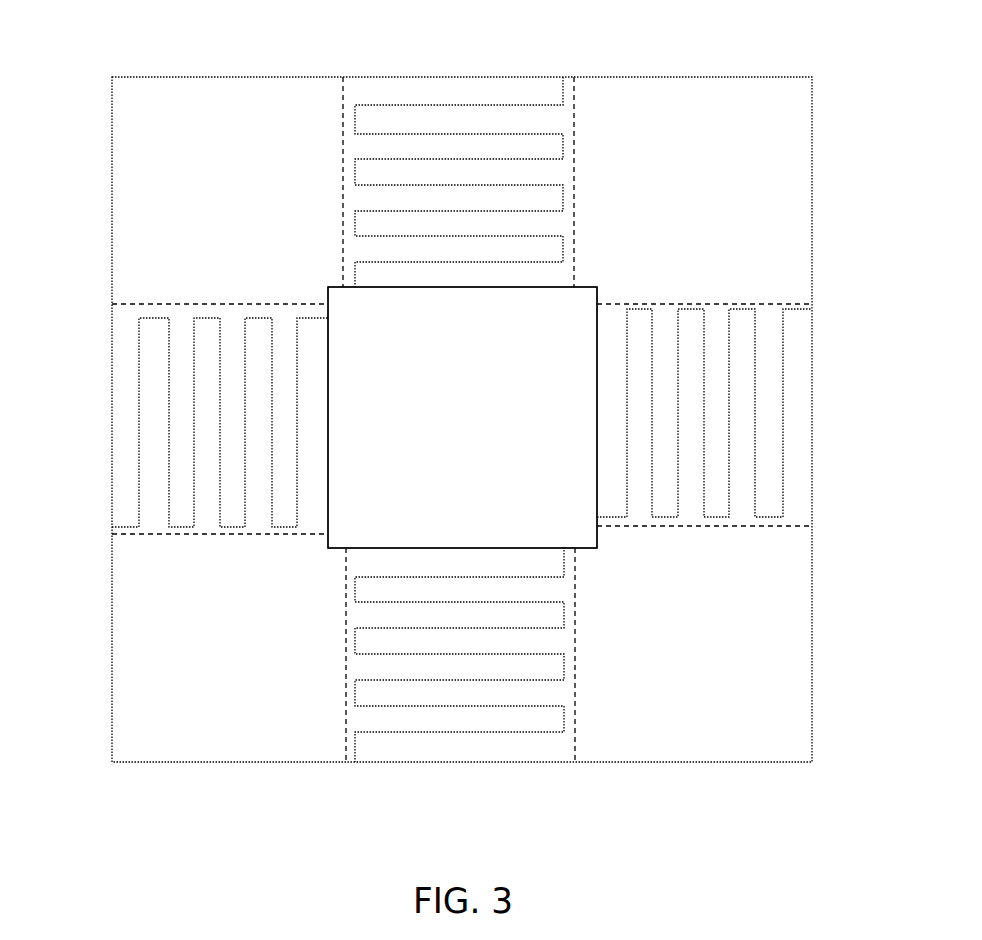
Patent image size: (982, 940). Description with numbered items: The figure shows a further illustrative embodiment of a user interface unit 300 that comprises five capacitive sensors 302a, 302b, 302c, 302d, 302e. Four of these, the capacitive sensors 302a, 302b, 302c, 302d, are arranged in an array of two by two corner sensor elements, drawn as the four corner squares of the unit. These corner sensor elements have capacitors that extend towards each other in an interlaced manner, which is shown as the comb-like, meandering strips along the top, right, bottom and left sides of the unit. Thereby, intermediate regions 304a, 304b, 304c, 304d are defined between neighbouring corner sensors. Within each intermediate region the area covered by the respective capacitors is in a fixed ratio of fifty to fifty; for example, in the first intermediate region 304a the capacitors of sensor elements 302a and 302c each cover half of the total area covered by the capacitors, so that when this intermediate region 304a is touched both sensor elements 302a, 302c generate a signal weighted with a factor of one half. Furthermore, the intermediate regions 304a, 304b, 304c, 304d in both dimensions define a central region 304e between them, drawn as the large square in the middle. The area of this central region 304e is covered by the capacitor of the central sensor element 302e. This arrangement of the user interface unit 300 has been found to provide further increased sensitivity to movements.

The user interface unit 300 is at (267, 77).
The capacitive sensor 302a is at (227, 190).
The capacitive sensor 302b is at (229, 648).
The capacitive sensor 302c is at (693, 190).
The capacitive sensor 302d is at (693, 644).
The central sensor element 302e is at (462, 417).
The first intermediate region 304a is at (482, 77).
The intermediate region 304b is at (812, 402).
The intermediate region 304c is at (472, 763).
The intermediate region 304d is at (112, 410).
The central region 304e is at (332, 549).